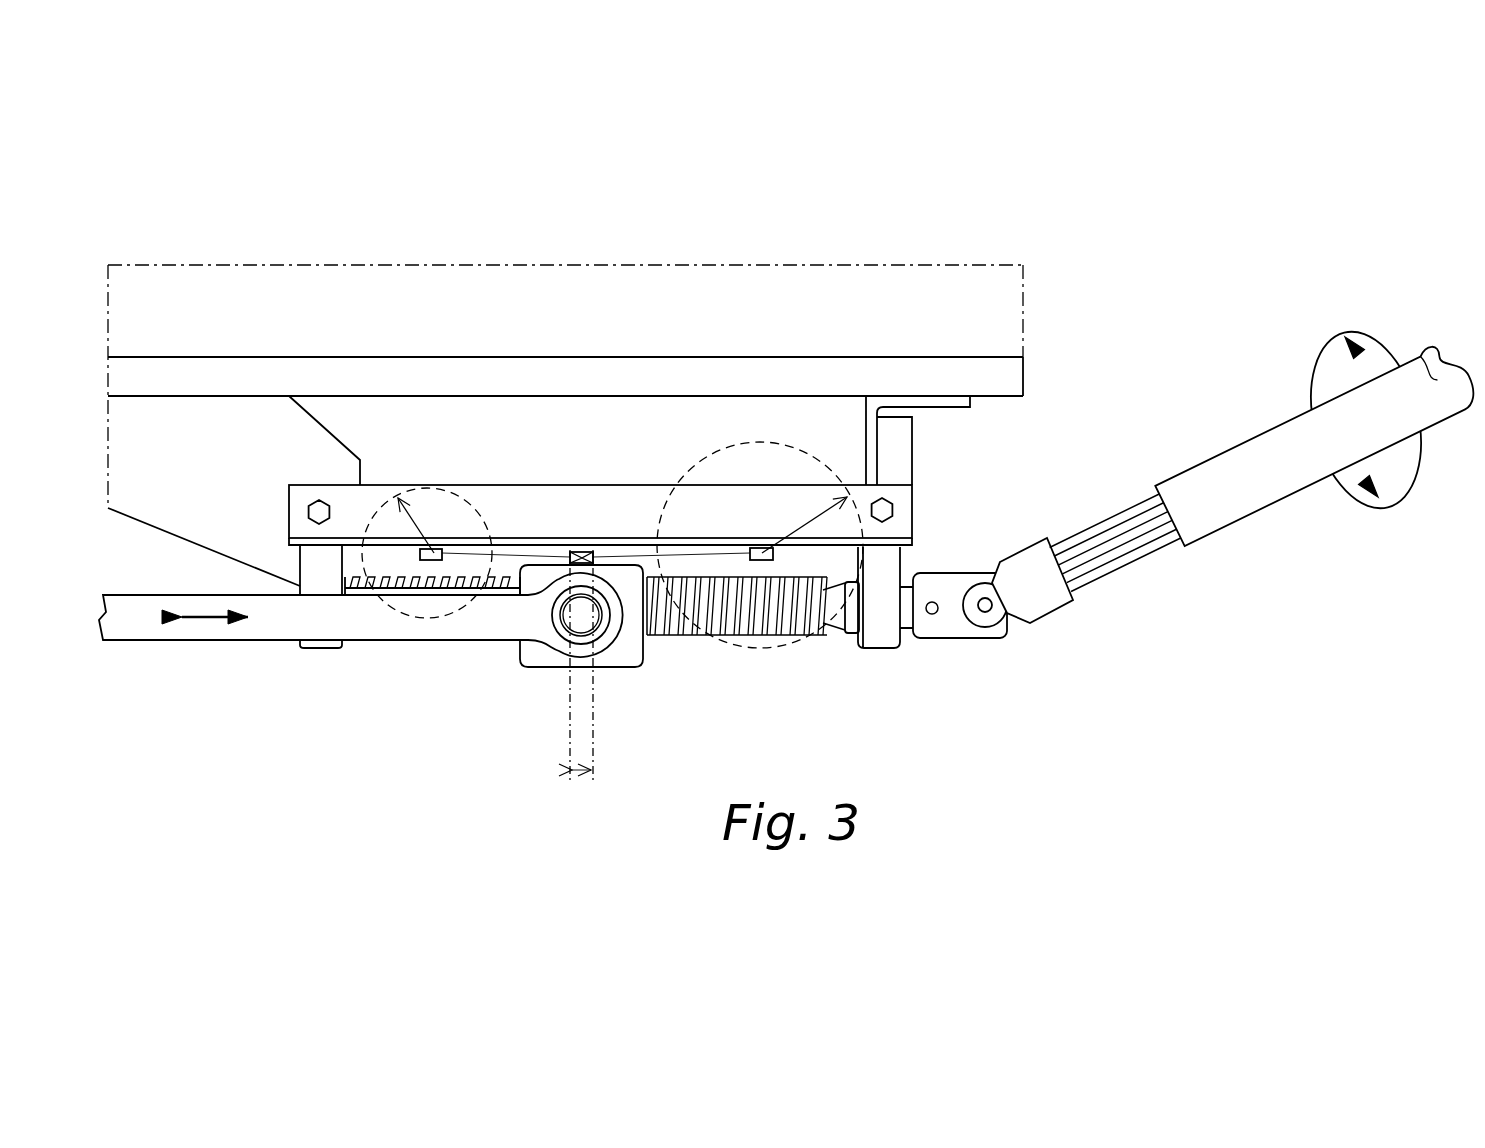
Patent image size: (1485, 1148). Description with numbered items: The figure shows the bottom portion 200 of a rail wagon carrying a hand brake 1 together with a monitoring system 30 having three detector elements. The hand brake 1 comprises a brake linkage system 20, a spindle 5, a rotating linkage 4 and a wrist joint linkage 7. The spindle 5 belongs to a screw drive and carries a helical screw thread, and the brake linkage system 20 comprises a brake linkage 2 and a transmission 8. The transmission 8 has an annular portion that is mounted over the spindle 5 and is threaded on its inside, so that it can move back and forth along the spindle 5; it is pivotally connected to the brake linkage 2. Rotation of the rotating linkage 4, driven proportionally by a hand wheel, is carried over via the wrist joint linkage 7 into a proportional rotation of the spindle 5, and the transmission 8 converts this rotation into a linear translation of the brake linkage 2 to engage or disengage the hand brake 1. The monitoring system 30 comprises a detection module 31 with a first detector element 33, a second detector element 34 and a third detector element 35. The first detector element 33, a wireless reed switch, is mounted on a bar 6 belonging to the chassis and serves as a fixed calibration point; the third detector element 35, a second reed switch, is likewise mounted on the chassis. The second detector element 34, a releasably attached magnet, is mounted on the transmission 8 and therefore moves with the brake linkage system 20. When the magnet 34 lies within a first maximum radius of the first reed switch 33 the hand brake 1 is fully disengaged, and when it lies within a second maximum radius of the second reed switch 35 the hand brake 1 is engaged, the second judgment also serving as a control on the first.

The hand brake 1 is at (1125, 730).
The brake linkage 2 is at (218, 640).
The rotating linkage 4 is at (1257, 483).
The spindle 5 is at (740, 636).
The bar 6 is at (673, 508).
The wrist joint linkage 7 is at (985, 612).
The transmission 8 is at (583, 620).
The brake linkage system 20 is at (392, 692).
The monitoring system 30 is at (467, 692).
The detection module 31 is at (537, 692).
The first detector element 33 is at (433, 549).
The second detector element 34 is at (584, 552).
The third detector element 35 is at (765, 548).
The bottom portion 200 is at (1232, 230).